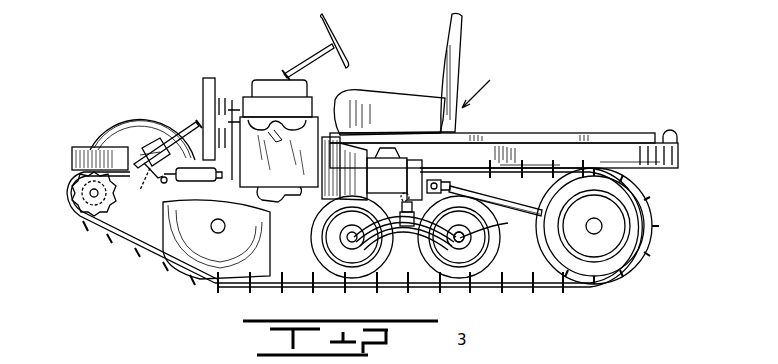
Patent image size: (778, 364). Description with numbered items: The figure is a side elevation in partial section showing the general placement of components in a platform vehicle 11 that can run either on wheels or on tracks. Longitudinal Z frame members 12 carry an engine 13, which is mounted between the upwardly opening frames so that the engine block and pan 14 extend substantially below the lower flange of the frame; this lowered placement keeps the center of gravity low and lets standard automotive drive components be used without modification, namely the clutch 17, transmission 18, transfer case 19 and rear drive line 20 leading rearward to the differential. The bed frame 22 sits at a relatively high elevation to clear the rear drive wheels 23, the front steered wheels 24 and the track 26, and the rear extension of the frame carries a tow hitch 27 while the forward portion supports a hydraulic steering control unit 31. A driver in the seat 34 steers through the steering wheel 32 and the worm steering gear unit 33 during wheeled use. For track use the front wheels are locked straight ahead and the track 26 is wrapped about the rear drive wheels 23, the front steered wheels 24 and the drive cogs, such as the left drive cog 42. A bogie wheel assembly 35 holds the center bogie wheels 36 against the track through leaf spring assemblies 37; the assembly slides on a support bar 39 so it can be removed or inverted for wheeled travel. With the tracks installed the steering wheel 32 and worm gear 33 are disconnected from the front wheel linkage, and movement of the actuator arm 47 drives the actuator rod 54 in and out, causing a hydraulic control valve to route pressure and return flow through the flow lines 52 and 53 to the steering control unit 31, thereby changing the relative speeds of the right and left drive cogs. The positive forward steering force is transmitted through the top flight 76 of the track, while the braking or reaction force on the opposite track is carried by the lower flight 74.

The platform vehicle 11 is at (428, 99).
The Z frame members 12 is at (588, 150).
The engine 13 is at (262, 78).
The engine block and pan 14 is at (288, 195).
The clutch 17 is at (334, 137).
The transmission 18 is at (392, 165).
The transfer case 19 is at (414, 175).
The rear drive line 20 is at (500, 196).
The bed frame 22 is at (498, 134).
The drive wheels 23 is at (636, 258).
The front steered wheels 24 is at (168, 242).
The track 26 is at (540, 290).
The tow hitch 27 is at (680, 134).
The steering control unit 31 is at (66, 181).
The steering wheel 32 is at (312, 56).
The worm steering gear unit 33 is at (152, 146).
The seat 34 is at (440, 58).
The bogie wheel assembly 35 is at (408, 235).
The center bogie wheels 36 is at (312, 250).
The leaf spring assemblies 37 is at (490, 229).
The support bar 39 is at (445, 196).
The left drive cog 42 is at (70, 214).
The actuator arm 47 is at (160, 184).
The flow line 52 is at (116, 126).
The flow line 53 is at (134, 116).
The actuator rod 54 is at (170, 183).
The lower flight 74 is at (327, 288).
The top flight 76 is at (532, 165).